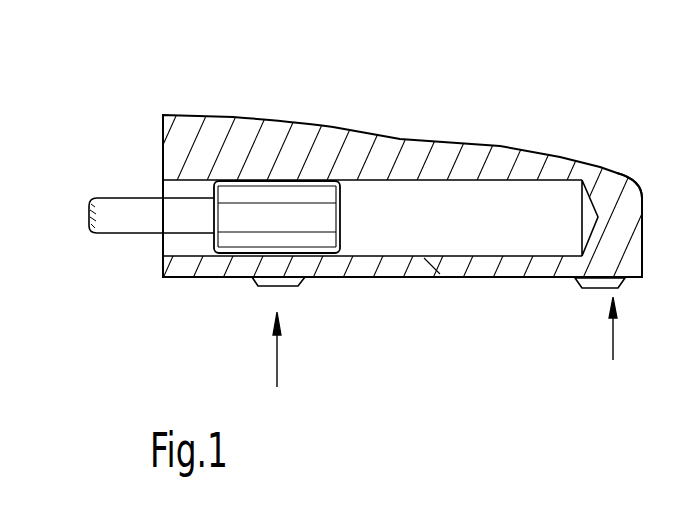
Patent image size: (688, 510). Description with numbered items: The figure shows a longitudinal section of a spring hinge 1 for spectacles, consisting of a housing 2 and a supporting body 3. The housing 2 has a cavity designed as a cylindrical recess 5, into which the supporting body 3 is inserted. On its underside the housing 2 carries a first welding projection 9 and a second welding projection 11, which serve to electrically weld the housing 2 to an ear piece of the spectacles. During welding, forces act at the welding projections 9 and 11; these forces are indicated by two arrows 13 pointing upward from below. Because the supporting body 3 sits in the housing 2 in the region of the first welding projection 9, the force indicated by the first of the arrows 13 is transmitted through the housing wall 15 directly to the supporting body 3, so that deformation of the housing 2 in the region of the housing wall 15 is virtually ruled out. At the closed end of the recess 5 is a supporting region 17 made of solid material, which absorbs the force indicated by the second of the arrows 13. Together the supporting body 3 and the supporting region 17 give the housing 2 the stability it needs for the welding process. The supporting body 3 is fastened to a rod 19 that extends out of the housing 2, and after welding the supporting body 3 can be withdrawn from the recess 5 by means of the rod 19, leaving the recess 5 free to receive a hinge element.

The spring hinge 1 is at (333, 126).
The housing 2 is at (232, 143).
The supporting body 3 is at (300, 230).
The cylindrical recess 5 is at (454, 208).
The first welding projection 9 is at (268, 287).
The second welding projection 11 is at (595, 290).
The arrows 13 is at (277, 358).
The housing wall 15 is at (430, 265).
The supporting region 17 is at (604, 203).
The rod 19 is at (143, 215).